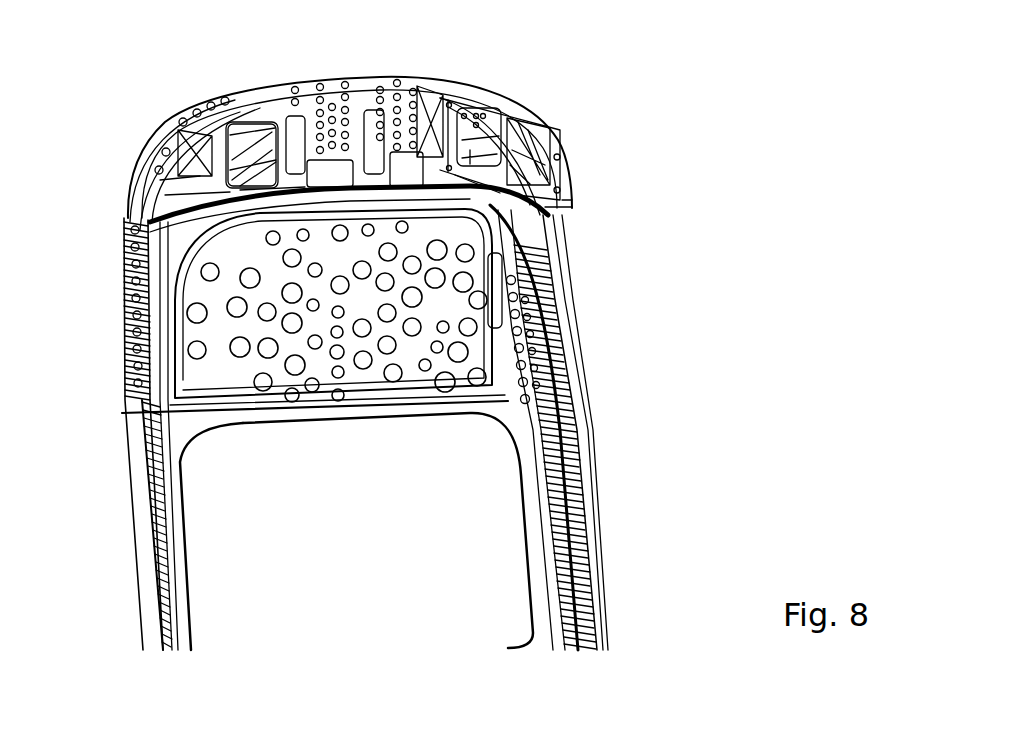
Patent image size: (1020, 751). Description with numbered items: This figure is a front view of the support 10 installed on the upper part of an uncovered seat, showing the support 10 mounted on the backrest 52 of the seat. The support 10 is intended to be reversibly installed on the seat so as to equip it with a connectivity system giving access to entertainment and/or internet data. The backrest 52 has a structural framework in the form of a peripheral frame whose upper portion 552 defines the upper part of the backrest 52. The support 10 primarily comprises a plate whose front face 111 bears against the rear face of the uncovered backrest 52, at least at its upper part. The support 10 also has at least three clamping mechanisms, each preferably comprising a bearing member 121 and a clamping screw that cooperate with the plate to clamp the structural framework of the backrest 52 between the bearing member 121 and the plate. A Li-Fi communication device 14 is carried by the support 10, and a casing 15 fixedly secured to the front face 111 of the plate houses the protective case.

The support 10 is at (662, 124).
The communication device 14 is at (237, 140).
The casing 15 is at (148, 120).
The backrest 52 is at (618, 466).
The front face 111 is at (388, 80).
The bearing member 121 is at (373, 173).
The upper portion 552 is at (235, 214).